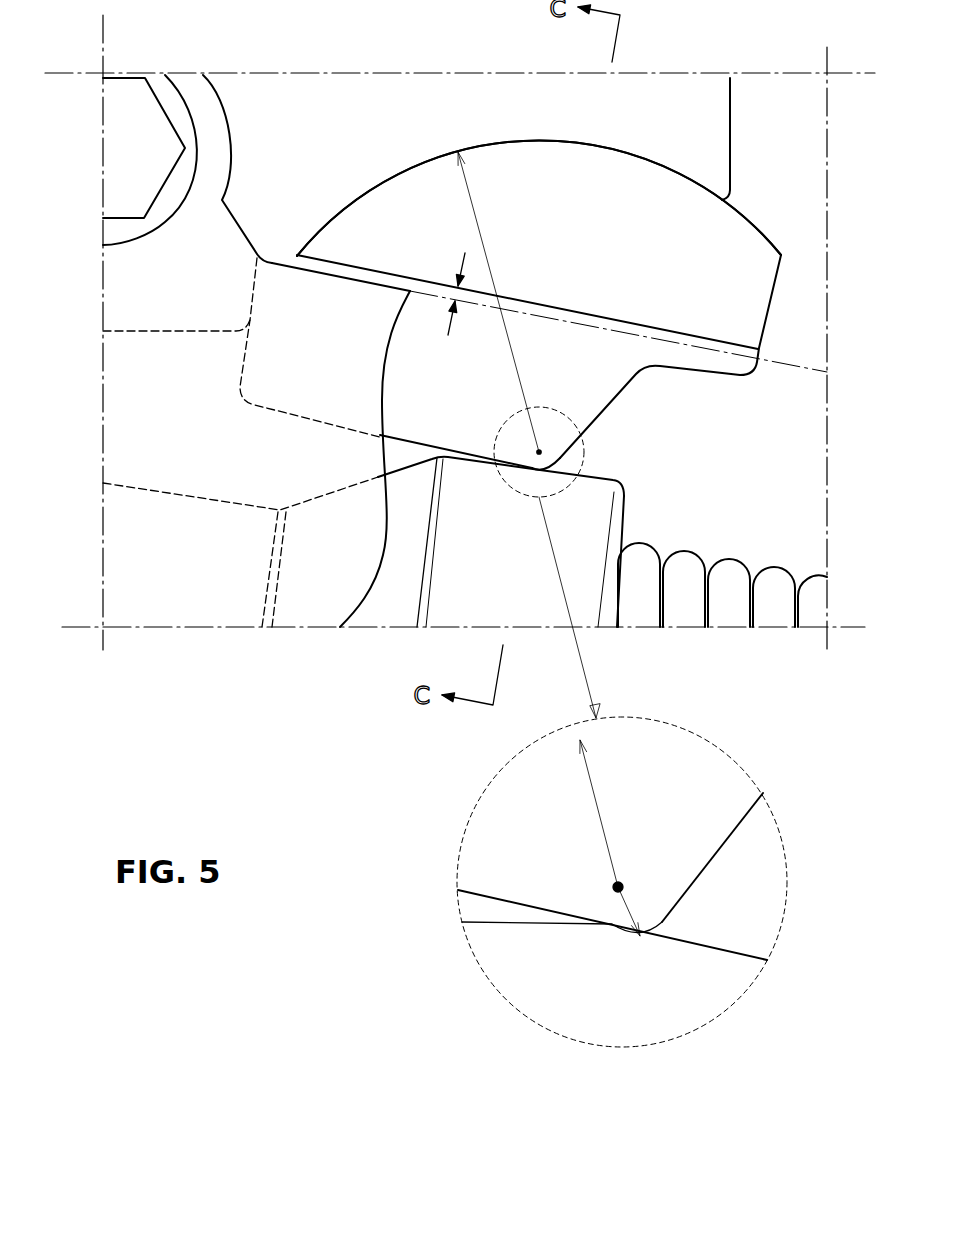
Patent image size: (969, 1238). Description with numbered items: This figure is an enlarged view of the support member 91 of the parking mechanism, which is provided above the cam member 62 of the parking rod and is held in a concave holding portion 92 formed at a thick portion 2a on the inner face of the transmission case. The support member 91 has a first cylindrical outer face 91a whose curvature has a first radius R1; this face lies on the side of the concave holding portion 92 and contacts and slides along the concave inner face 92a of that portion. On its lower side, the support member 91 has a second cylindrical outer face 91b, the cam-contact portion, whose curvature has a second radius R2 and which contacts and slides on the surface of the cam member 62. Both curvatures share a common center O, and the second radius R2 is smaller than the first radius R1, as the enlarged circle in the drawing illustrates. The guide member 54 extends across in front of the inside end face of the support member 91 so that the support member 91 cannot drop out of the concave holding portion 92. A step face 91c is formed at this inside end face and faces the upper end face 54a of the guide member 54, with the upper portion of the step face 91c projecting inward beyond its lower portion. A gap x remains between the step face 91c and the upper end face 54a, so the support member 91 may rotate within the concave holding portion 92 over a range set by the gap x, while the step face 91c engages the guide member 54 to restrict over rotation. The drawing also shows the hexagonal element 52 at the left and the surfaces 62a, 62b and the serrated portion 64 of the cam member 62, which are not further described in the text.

The thick portion 2a is at (712, 128).
The bolt head 52 is at (130, 92).
The guide member 54 is at (465, 351).
The upper end face 54a is at (372, 287).
The cam member 62 is at (465, 762).
The hidden edge of base member 62a is at (325, 495).
The top surface of base member 62b is at (600, 482).
The comb teeth 64 is at (773, 565).
The support member 91 is at (596, 586).
The first cylindrical outer face 91a is at (540, 144).
The second cylindrical outer face 91b is at (557, 463).
The step face 91c is at (366, 268).
The concave holding portion 92 is at (539, 138).
The concave inner face 92a is at (513, 142).
The first radius R1 is at (543, 519).
The second radius R2 is at (641, 910).
The center O is at (612, 887).
The gap x is at (452, 307).